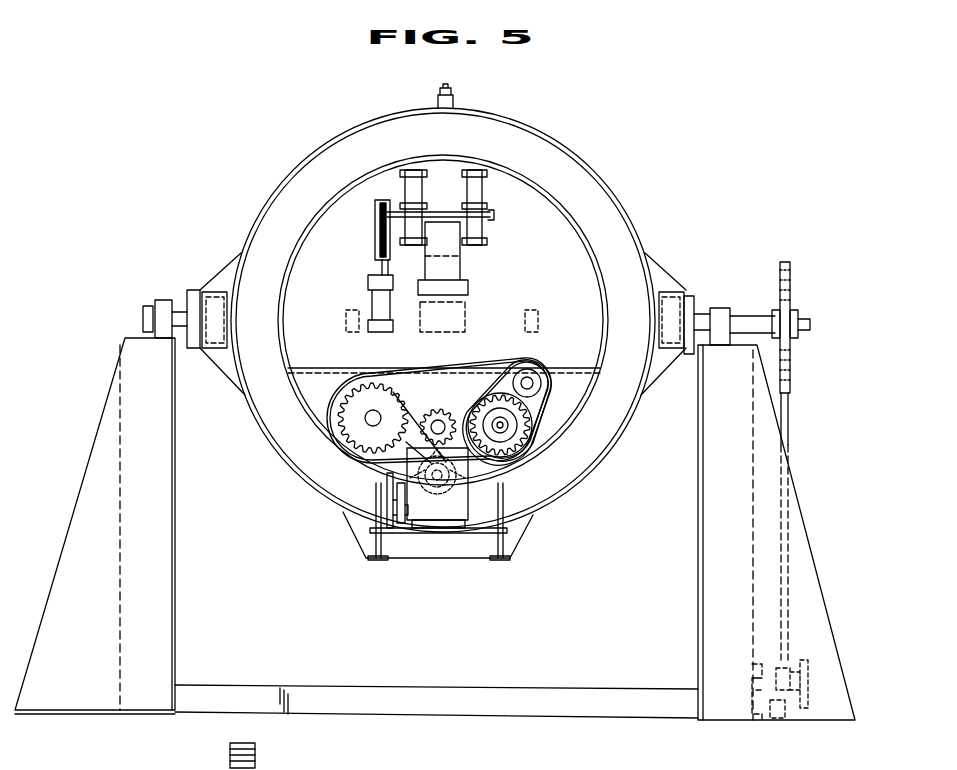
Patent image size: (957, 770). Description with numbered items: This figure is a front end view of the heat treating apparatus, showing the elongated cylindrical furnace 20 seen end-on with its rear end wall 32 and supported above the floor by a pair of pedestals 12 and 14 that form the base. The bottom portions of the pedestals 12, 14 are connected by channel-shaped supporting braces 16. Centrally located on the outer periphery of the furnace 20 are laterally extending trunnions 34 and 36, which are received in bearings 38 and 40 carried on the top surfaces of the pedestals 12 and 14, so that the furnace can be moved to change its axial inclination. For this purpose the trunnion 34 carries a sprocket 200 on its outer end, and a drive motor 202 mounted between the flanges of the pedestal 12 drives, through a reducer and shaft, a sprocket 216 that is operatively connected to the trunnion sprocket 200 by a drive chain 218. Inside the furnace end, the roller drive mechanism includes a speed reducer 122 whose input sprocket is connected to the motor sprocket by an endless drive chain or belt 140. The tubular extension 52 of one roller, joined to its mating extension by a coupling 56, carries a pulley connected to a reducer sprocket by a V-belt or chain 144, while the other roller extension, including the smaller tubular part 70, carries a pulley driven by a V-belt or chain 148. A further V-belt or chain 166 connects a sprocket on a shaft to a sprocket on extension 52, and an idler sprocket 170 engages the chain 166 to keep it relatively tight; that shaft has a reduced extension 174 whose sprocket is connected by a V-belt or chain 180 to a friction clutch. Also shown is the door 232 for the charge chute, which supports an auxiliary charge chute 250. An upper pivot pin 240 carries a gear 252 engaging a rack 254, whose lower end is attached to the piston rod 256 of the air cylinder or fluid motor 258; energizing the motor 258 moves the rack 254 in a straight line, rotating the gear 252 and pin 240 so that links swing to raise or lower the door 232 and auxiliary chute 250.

The pedestal 12 is at (797, 511).
The pedestal 14 is at (93, 461).
The channel-shaped supporting brace 16 is at (478, 693).
The furnace 20 is at (598, 163).
The rear end wall 32 is at (256, 762).
The trunnion 34 is at (752, 316).
The trunnion 36 is at (186, 298).
The bearing 38 is at (720, 306).
The bearing 40 is at (160, 300).
The tubular extension 52 is at (370, 418).
The coupling 56 is at (430, 552).
The tubular part 70 is at (507, 436).
The speed reducer 122 is at (453, 507).
The endless drive chain or belt 140 is at (392, 525).
The V-belt or chain 144 is at (384, 472).
The V-belt or chain 148 is at (495, 463).
The V-belt or chain 166 is at (418, 368).
The idler sprocket 170 is at (456, 412).
The shaft extension 174 is at (535, 380).
The V-belt or chain 180 is at (518, 430).
The sprocket 200 is at (780, 271).
The drive motor 202 is at (757, 722).
The sprocket 216 is at (774, 722).
The drive chain 218 is at (790, 421).
The door 232 is at (455, 248).
The pivot pin 240 is at (483, 222).
The auxiliary charge chute 250 is at (467, 324).
The gear 252 is at (383, 210).
The rack 254 is at (375, 234).
The piston rod 256 is at (380, 263).
The air cylinder or fluid motor 258 is at (372, 302).